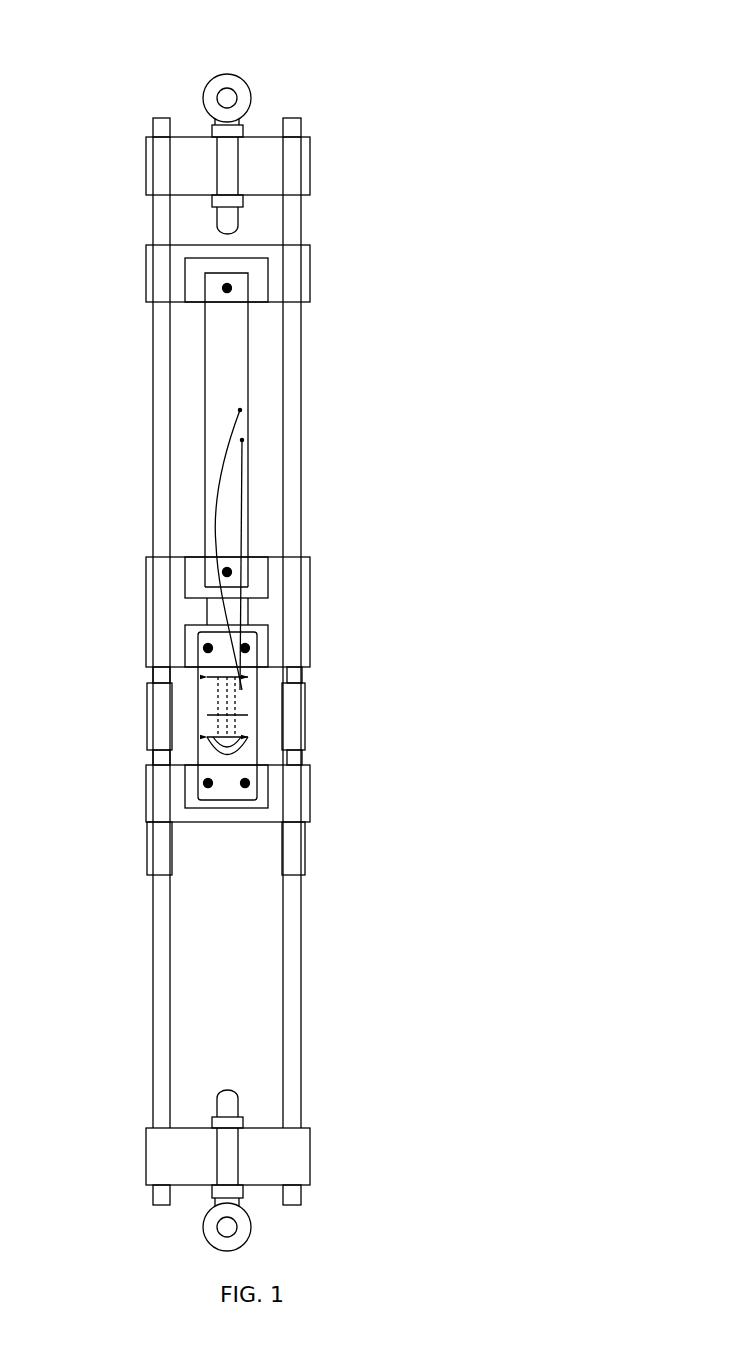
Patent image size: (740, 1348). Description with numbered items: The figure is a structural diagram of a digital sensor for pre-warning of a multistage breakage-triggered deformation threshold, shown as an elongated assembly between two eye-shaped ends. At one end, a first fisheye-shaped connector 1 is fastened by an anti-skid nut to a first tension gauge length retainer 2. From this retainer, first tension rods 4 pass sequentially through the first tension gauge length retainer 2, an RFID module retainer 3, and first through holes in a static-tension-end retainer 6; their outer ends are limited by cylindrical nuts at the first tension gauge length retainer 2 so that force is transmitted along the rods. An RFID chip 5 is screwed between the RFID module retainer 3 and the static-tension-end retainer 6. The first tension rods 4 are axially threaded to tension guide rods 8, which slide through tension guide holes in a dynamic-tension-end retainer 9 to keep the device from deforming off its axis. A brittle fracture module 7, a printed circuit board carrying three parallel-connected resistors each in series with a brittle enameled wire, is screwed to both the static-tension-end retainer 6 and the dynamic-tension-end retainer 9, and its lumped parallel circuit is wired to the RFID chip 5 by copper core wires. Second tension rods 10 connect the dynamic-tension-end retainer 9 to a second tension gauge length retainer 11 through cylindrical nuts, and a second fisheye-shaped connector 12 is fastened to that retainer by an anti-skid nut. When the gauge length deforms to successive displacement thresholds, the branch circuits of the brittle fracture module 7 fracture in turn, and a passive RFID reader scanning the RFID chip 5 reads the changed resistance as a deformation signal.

The first fisheye-shaped connector 1 is at (202, 82).
The first tension gauge length retainer 2 is at (330, 177).
The RFID module retainer 3 is at (320, 273).
The first tension rod 4 is at (308, 370).
The RFID chip 5 is at (200, 493).
The static-tension-end retainer 6 is at (320, 600).
The brittle fracture module 7 is at (188, 710).
The tension guide rod 8 is at (310, 738).
The dynamic-tension-end retainer 9 is at (138, 800).
The second tension rod 10 is at (308, 972).
The second tension gauge length retainer 11 is at (140, 1148).
The second fisheye-shaped connector 12 is at (258, 1237).